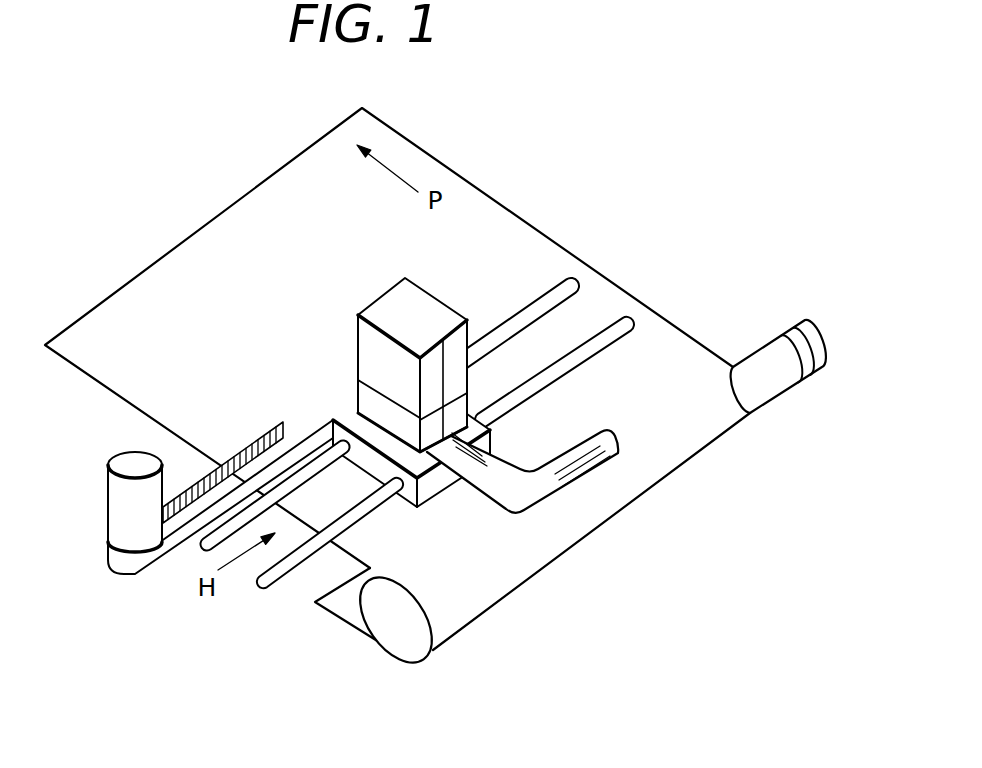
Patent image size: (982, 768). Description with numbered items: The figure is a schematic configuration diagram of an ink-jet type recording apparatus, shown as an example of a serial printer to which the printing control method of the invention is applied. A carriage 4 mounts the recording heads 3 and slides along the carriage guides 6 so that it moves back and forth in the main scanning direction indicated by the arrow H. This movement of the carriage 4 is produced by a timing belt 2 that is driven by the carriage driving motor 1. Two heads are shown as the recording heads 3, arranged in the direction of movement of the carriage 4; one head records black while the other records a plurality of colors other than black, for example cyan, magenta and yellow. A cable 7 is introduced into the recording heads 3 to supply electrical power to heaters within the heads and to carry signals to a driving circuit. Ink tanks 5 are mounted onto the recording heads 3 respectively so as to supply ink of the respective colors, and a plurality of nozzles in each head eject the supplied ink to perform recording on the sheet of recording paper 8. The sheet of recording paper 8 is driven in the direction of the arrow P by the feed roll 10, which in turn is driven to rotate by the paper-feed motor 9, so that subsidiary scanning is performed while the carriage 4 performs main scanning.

The carriage driving motor 1 is at (120, 512).
The timing belt 2 is at (143, 567).
The recording heads 3 is at (366, 404).
The carriage 4 is at (430, 490).
The ink tanks 5 is at (395, 353).
The carriage guides 6 is at (605, 331).
The cable 7 is at (578, 440).
The sheet of recording paper 8 is at (140, 287).
The paper-feed motor 9 is at (798, 320).
The feed roll 10 is at (395, 636).